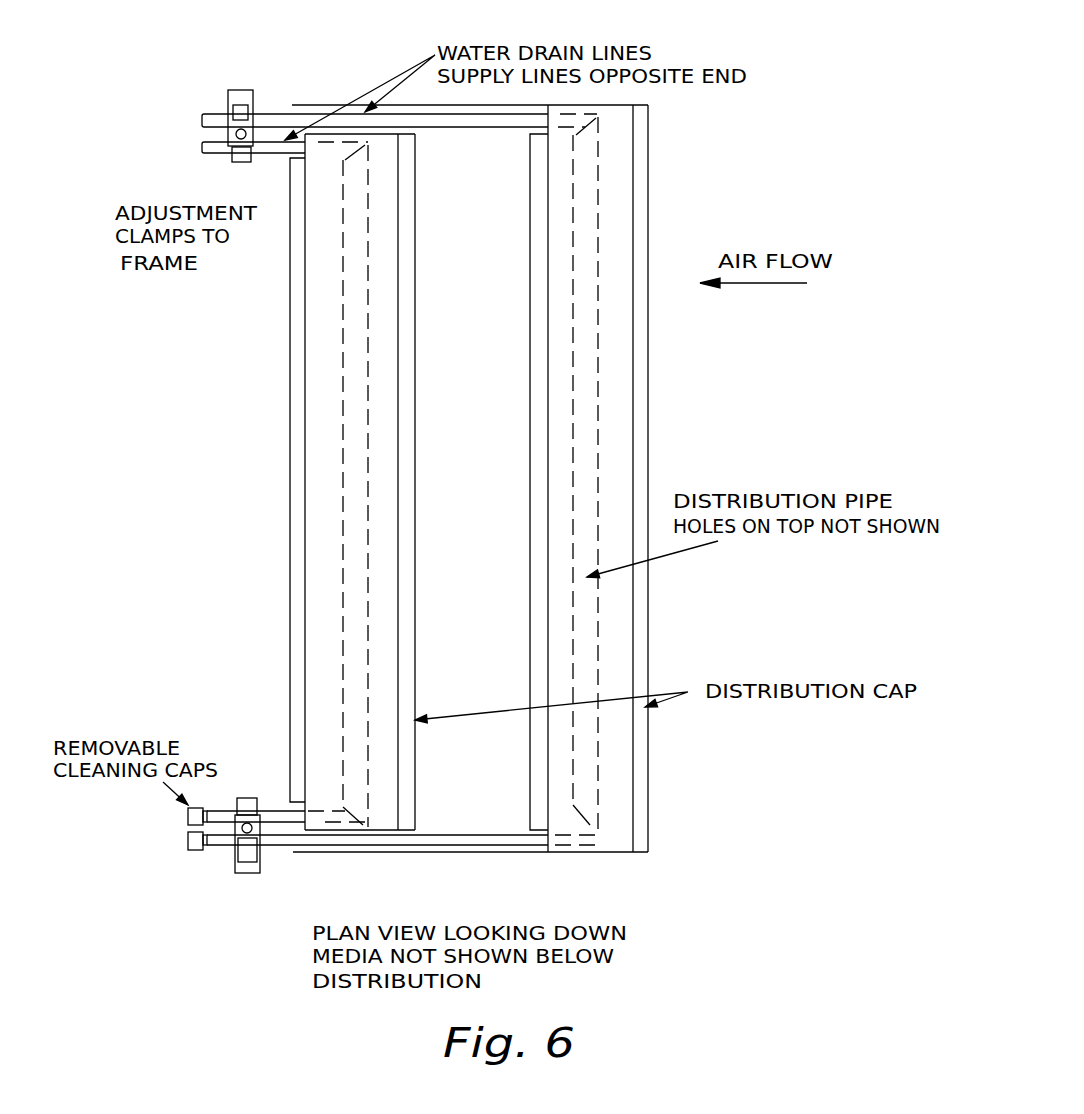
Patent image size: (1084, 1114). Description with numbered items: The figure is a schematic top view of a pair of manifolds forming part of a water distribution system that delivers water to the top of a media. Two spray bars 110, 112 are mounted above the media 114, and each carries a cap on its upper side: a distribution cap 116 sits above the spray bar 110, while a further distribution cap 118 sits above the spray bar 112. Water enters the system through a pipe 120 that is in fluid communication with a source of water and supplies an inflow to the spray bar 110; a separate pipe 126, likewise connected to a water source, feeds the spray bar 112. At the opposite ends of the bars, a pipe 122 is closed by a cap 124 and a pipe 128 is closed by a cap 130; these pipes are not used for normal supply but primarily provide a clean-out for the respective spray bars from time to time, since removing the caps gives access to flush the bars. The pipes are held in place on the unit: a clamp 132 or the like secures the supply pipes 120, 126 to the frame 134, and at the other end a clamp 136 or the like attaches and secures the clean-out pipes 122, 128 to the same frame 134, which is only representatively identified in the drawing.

The spray bar 110 is at (598, 220).
The spray bar 112 is at (343, 338).
The media 114 is at (513, 405).
The distribution cap 116 is at (620, 167).
The distribution cap 118 is at (315, 287).
The pipe 120 is at (268, 113).
The pipe 122 is at (523, 847).
The cap 124 is at (187, 846).
The pipe 126 is at (202, 149).
The pipe 128 is at (217, 807).
The cap 130 is at (187, 815).
The clamp 132 is at (245, 90).
The frame 134 is at (330, 105).
The clamp 136 is at (243, 877).